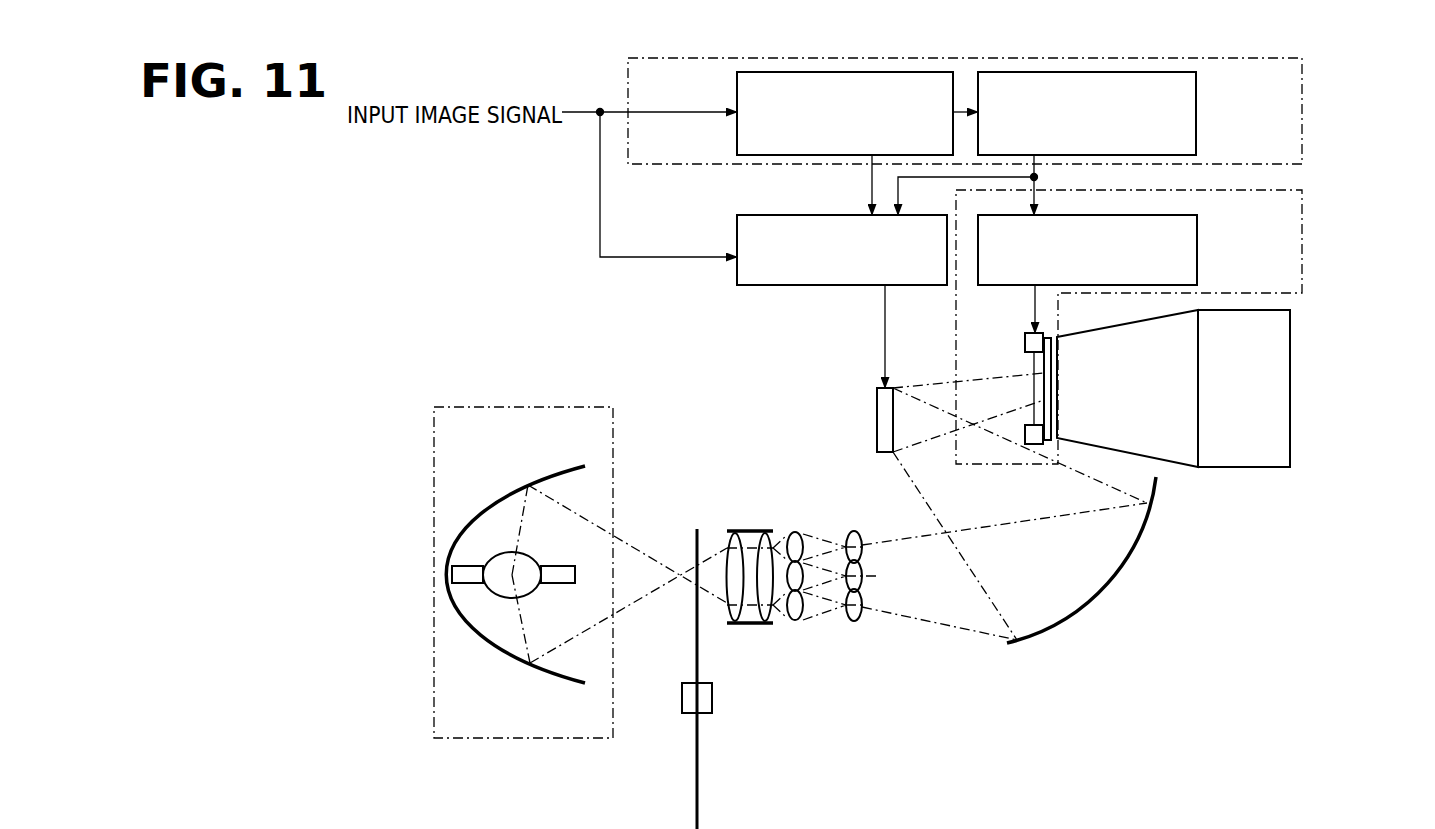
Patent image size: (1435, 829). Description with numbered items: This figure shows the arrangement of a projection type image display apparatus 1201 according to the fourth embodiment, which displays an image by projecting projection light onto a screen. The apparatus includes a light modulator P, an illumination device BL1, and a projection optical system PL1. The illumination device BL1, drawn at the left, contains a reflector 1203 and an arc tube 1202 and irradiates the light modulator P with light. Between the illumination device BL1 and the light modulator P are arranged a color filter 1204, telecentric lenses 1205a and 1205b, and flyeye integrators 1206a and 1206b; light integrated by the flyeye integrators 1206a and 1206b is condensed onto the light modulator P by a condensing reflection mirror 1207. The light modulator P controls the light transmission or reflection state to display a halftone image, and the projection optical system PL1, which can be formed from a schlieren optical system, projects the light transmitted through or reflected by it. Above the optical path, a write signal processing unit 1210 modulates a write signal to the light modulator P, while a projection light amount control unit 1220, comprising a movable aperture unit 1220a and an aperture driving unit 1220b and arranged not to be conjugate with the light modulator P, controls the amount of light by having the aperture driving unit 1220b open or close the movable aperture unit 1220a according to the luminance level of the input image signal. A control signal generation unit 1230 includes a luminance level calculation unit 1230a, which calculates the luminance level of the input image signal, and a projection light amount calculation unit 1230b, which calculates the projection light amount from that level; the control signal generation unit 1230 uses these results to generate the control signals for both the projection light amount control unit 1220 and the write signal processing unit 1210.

The projection type image display apparatus 1201 is at (522, 225).
The arc tube 1202 is at (528, 596).
The reflector 1203 is at (566, 470).
The color filter 1204 is at (700, 794).
The telecentric lens 1205a is at (730, 541).
The telecentric lens 1205b is at (770, 533).
The flyeye integrator 1206a is at (800, 622).
The flyeye integrator 1206b is at (856, 621).
The condensing reflection mirror 1207 is at (1105, 582).
The write signal processing unit 1210 is at (737, 231).
The projection light amount control unit 1220 is at (1302, 277).
The movable aperture unit 1220a is at (1025, 343).
The aperture driving unit 1220b is at (1197, 228).
The control signal generation unit 1230 is at (1302, 144).
The luminance level calculation unit 1230a is at (737, 82).
The projection light amount calculation unit 1230b is at (1196, 82).
The light modulator P is at (877, 400).
The illumination device BL1 is at (478, 407).
The projection optical system PL1 is at (1150, 467).